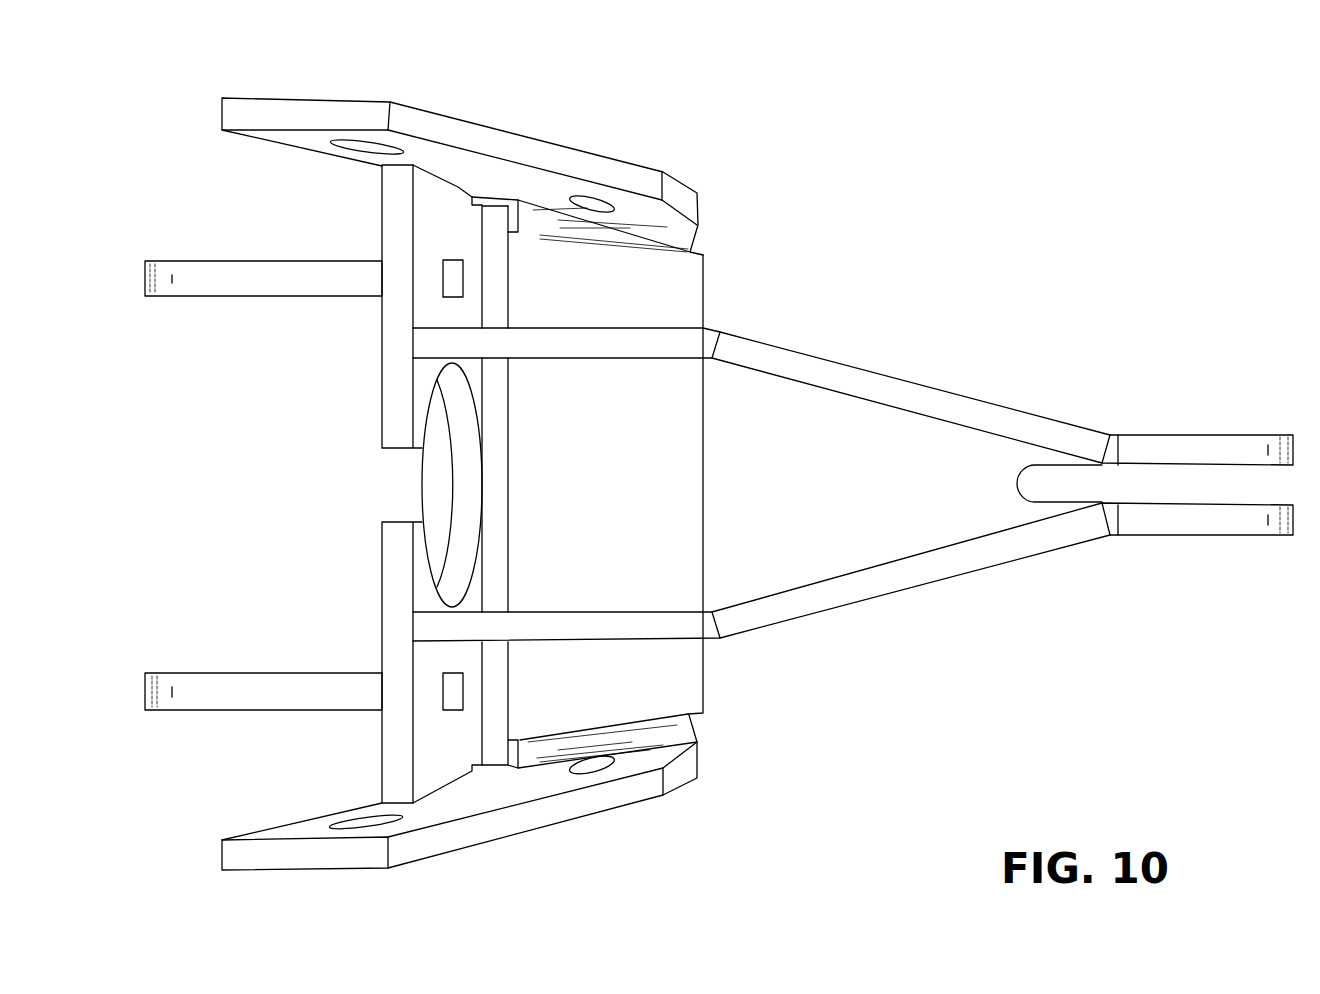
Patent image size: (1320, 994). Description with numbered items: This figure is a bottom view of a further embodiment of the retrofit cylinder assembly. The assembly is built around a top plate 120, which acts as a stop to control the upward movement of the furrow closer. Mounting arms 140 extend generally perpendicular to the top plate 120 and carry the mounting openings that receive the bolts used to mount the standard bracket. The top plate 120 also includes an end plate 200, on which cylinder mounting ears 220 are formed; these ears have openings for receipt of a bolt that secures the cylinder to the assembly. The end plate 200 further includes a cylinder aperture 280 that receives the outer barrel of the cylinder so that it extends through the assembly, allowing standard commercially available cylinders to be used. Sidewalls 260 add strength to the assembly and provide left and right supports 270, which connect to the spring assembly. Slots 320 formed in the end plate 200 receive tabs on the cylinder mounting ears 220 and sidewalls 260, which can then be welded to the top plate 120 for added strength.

The top plate 120 is at (655, 673).
The mounting arms 140 is at (325, 100).
The end plate 200 is at (382, 350).
The cylinder mounting ears 220 is at (230, 270).
The sidewalls 260 is at (985, 548).
The supports 270 is at (1218, 447).
The cylinder aperture 280 is at (403, 480).
The slots 320 is at (458, 275).